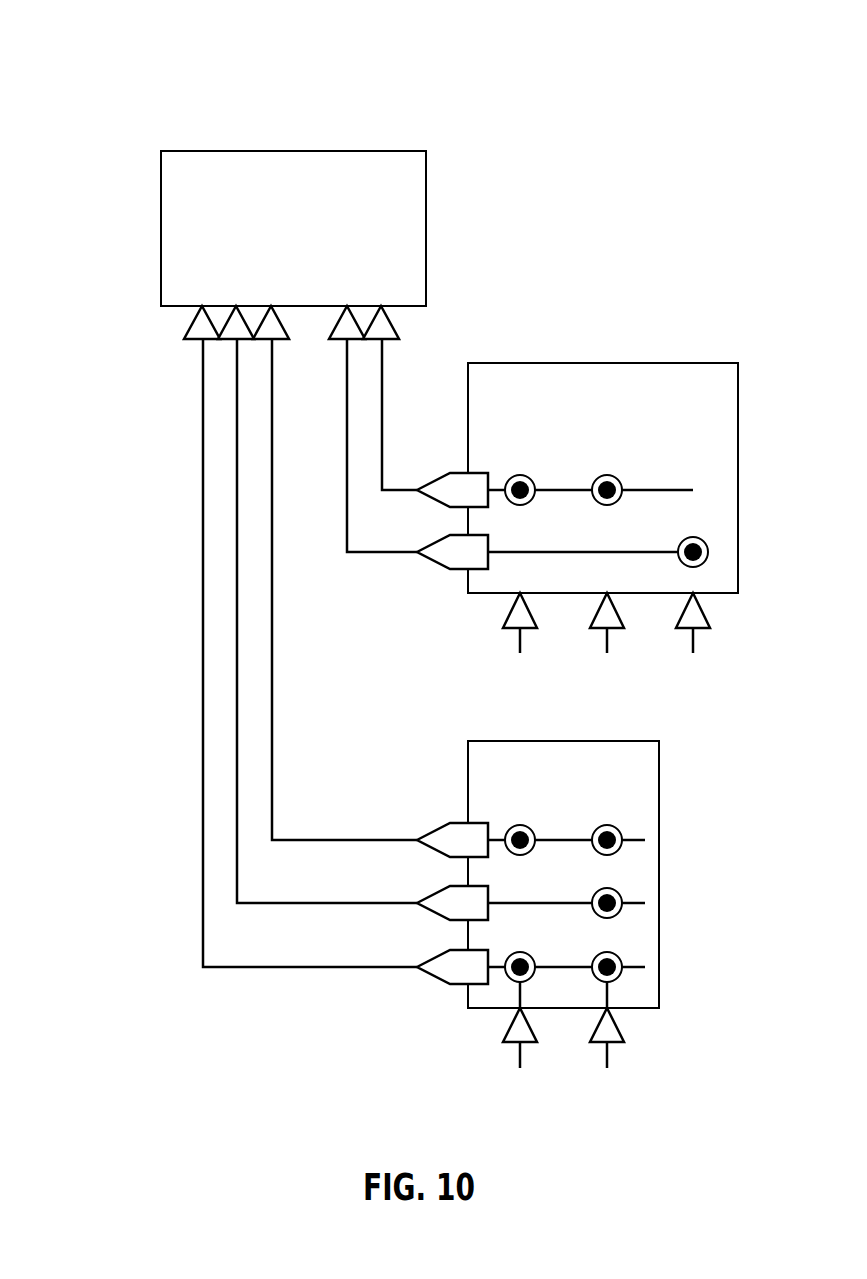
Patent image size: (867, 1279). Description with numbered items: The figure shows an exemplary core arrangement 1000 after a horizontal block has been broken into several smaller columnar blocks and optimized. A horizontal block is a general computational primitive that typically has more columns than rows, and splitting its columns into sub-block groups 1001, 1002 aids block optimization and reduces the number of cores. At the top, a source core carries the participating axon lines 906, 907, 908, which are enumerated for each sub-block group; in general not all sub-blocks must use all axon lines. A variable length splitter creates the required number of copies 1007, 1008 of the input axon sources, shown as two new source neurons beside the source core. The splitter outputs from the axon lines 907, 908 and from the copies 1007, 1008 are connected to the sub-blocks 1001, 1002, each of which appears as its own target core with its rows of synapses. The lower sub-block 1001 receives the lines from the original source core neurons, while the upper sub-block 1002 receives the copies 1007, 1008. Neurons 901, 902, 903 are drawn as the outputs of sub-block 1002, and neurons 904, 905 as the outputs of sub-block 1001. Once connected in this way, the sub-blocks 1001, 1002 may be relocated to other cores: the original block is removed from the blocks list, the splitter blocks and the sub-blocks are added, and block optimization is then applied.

The core arrangement after optimization 1000 is at (440, 47).
The axon line 906 is at (192, 322).
The axon line 907 is at (230, 340).
The axon line 908 is at (265, 340).
The copy of input axon source 1007 is at (352, 340).
The copy of input axon source 1008 is at (395, 322).
The sub-block group 1002 is at (505, 455).
The sub-block group 1001 is at (628, 818).
The target neuron 901 is at (521, 645).
The target neuron 902 is at (607, 645).
The target neuron 903 is at (693, 645).
The target neuron 904 is at (521, 1046).
The target neuron 905 is at (608, 1046).